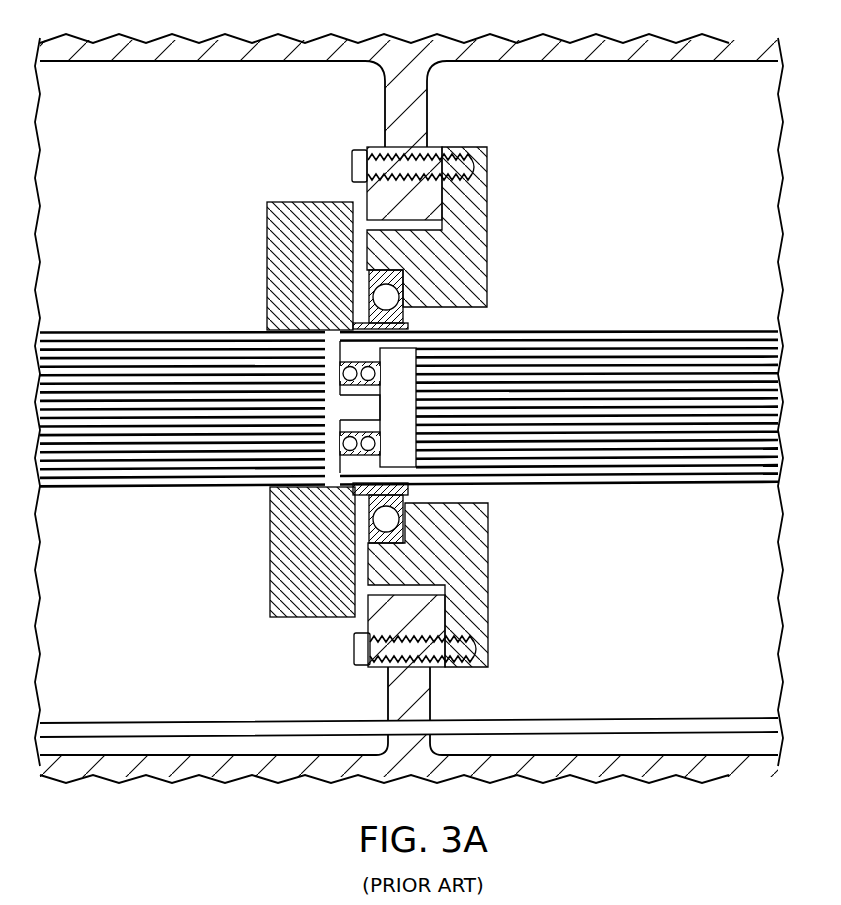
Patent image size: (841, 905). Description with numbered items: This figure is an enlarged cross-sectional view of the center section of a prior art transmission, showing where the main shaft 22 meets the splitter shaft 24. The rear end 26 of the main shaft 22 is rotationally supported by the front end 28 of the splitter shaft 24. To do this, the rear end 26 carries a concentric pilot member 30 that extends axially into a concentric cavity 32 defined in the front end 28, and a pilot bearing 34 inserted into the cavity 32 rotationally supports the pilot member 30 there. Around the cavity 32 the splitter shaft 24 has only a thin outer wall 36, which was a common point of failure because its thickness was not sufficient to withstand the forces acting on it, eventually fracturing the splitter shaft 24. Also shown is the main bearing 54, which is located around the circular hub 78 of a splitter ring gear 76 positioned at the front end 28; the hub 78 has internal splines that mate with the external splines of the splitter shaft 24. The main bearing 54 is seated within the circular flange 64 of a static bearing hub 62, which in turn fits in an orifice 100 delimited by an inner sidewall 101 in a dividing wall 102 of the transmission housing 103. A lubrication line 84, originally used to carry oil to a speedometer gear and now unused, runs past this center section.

The main shaft 22 is at (105, 327).
The splitter shaft 24 is at (637, 327).
The rear end of the main shaft 26 is at (172, 336).
The front end of the splitter shaft 28 is at (416, 348).
The pilot member 30 is at (343, 413).
The cavity 32 is at (403, 380).
The pilot bearing 34 is at (357, 457).
The outer wall 36 is at (416, 467).
The main bearing 54 is at (360, 288).
The static bearing hub 62 is at (488, 166).
The circular flange 64 is at (367, 248).
The splitter ring gear 76 is at (307, 195).
The hub 78 is at (298, 314).
The lubrication line 84 is at (172, 730).
The orifice 100 is at (430, 224).
The inner sidewall 101 is at (430, 578).
The dividing wall 102 is at (437, 613).
The transmission housing 103 is at (588, 758).